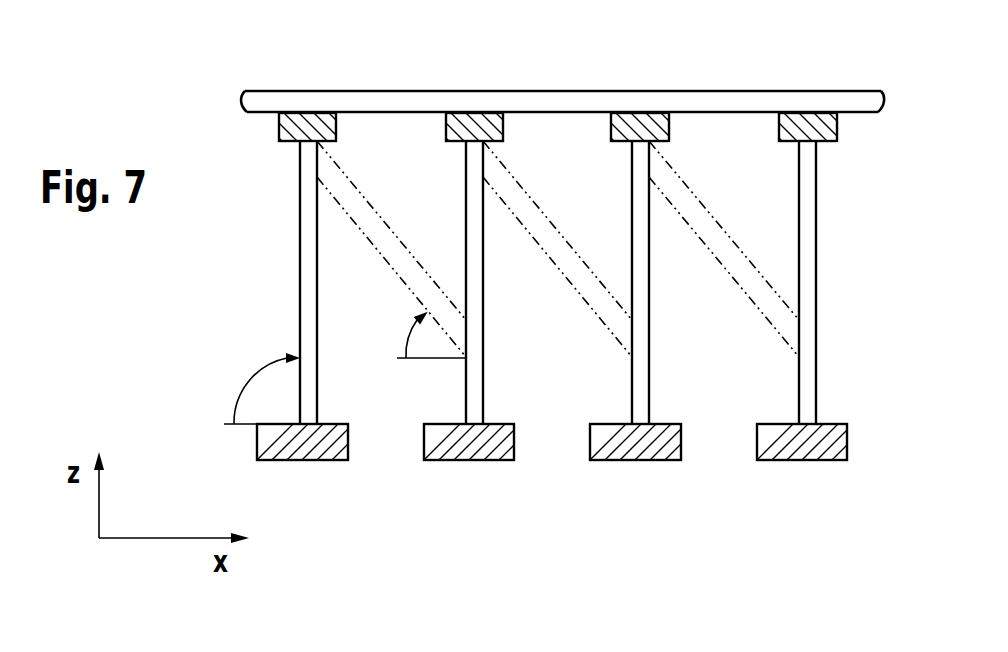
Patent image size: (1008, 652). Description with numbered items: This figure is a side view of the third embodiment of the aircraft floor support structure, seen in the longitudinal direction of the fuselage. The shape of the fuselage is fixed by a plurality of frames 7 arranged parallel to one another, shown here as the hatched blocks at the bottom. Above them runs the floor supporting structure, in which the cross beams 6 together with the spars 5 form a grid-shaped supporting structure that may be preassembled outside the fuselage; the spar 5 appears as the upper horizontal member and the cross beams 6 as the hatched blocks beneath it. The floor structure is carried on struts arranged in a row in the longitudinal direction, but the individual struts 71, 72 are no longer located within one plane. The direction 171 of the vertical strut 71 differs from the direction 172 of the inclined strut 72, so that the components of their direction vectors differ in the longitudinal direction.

The spar 5 is at (723, 102).
The cross beam 6 is at (301, 124).
The frame 7 is at (303, 446).
The strut 71 is at (307, 225).
The strut 72 is at (390, 216).
The direction of strut 171 is at (242, 390).
The direction of strut 172 is at (407, 343).